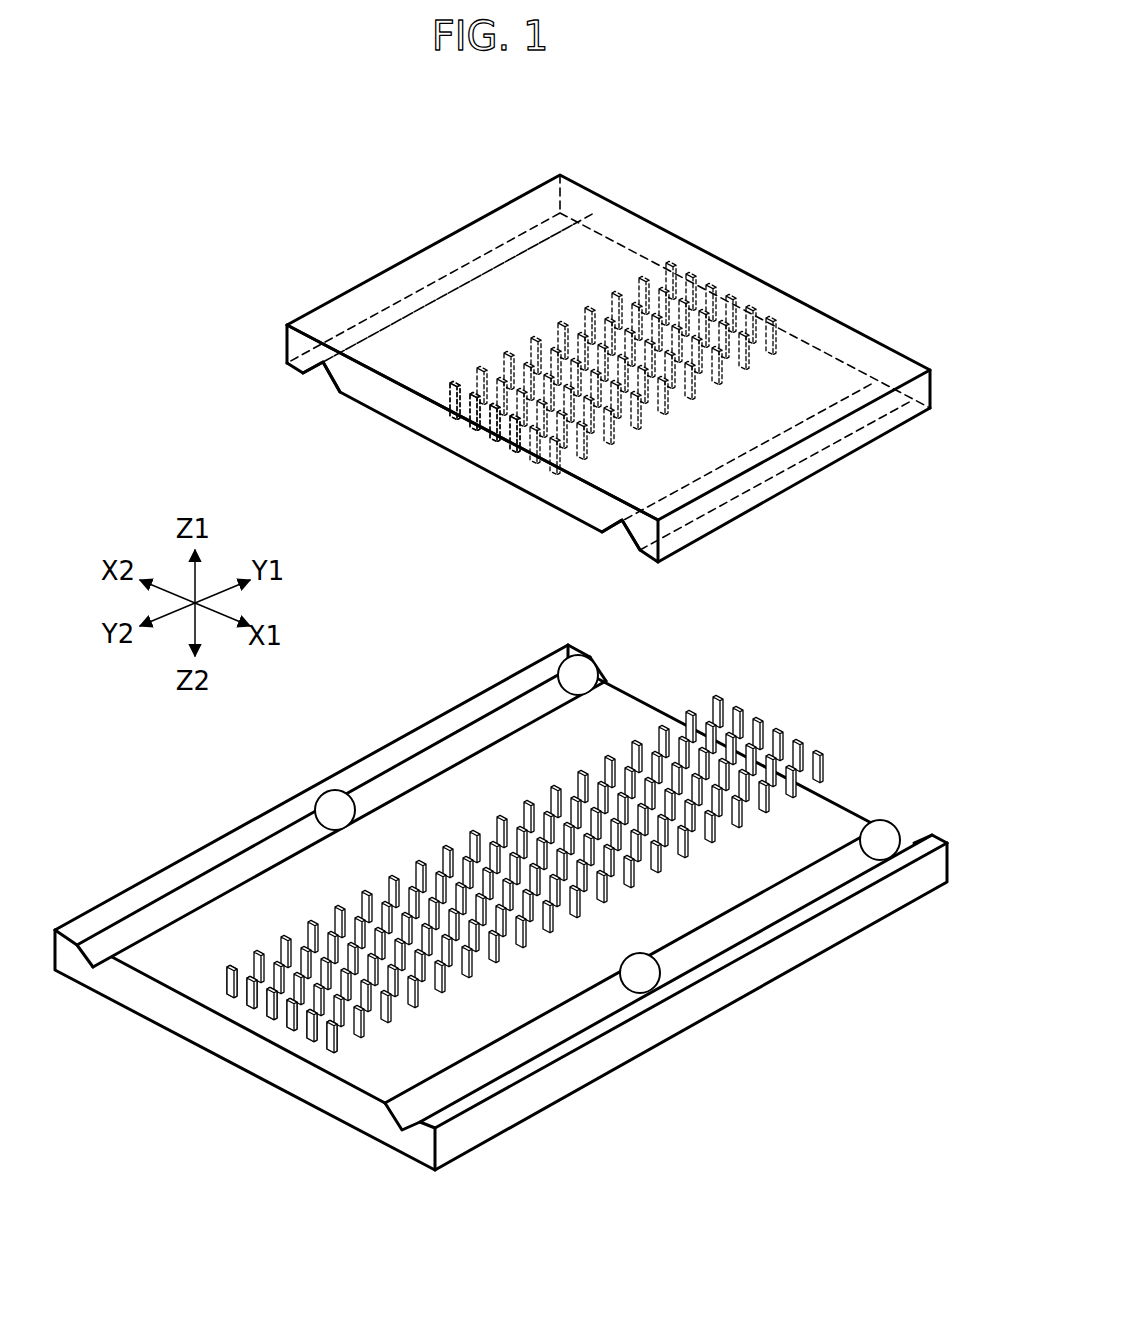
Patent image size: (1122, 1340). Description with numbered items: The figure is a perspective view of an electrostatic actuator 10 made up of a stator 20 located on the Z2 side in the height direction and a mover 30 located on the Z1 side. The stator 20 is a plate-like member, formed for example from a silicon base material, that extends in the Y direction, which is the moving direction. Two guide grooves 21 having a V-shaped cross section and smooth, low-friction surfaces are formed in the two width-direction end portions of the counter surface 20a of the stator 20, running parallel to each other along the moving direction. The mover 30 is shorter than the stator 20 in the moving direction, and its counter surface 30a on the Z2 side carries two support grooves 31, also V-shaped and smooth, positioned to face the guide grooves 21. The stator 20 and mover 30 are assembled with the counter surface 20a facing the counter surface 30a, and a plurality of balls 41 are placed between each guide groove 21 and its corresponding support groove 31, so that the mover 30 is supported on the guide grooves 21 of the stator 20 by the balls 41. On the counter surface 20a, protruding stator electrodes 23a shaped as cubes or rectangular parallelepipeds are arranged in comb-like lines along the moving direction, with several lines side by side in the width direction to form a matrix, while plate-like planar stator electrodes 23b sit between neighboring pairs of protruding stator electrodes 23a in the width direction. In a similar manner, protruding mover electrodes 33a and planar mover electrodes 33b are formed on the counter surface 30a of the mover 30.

The electrostatic actuator 10 is at (240, 158).
The stator 20 is at (755, 1022).
The counter surface 20a is at (430, 820).
The guide grooves 21 is at (198, 888).
The protruding stator electrodes 23a is at (288, 940).
The planar stator electrodes 23b is at (310, 1040).
The mover 30 is at (726, 248).
The counter surface 30a is at (587, 503).
The support grooves 31 is at (316, 386).
The protruding mover electrodes 33a is at (610, 326).
The planar mover electrodes 33b is at (485, 456).
The balls 41 is at (574, 672).